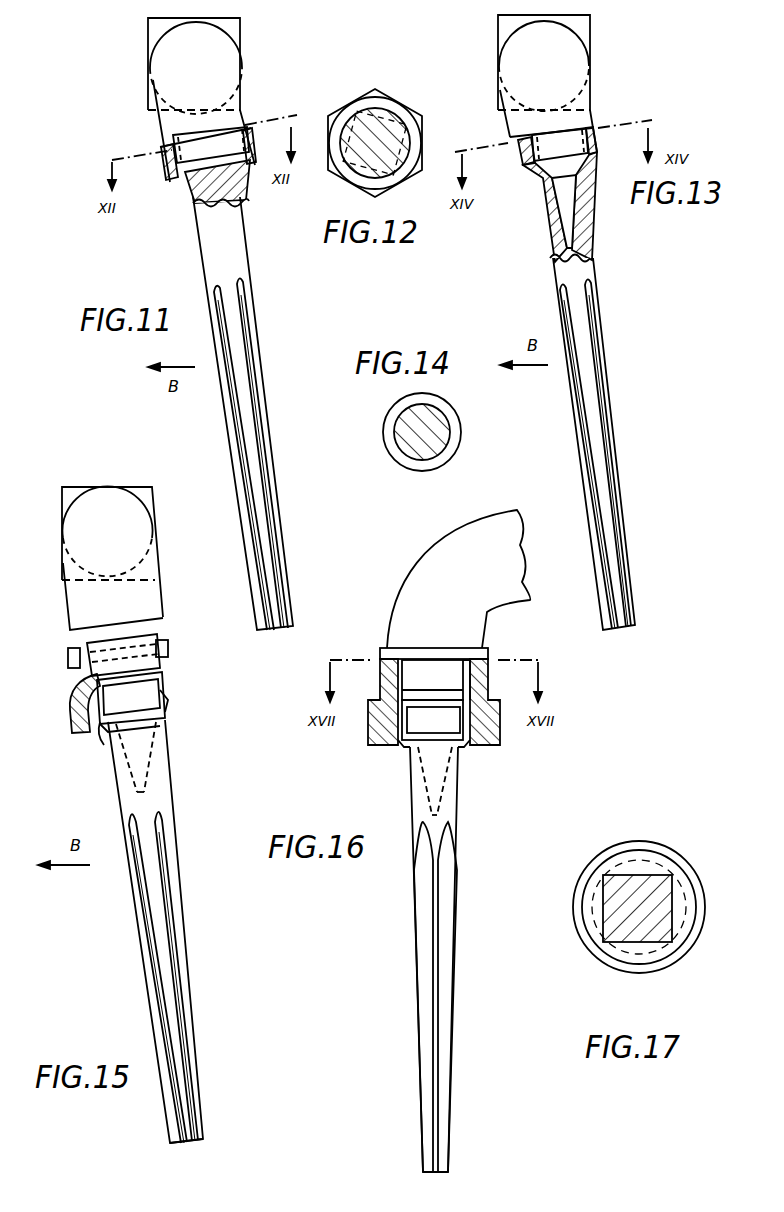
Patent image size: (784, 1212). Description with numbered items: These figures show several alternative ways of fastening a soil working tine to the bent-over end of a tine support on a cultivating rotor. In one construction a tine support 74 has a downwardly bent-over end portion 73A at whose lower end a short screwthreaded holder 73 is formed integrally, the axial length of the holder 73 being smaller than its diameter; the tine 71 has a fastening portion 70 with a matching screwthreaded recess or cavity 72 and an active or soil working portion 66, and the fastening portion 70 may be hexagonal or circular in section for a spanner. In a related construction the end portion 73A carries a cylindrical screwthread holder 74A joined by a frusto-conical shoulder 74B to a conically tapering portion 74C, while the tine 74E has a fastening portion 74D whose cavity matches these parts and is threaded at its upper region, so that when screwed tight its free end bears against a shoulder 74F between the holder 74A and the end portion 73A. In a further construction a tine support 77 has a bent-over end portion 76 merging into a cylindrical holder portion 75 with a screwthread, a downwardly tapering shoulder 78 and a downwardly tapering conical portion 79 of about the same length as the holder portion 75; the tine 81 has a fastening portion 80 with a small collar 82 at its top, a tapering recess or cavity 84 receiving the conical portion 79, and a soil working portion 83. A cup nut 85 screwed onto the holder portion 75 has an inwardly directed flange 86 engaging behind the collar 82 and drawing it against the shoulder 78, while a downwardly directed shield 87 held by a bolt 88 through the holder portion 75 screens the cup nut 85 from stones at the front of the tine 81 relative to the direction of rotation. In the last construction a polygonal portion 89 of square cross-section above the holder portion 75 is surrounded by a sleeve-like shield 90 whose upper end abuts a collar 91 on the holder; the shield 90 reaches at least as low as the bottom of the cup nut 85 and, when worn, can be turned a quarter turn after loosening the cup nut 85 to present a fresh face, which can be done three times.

In FIG. 11, the active or soil working portion 66 is at (230, 455).
In FIG. 11, the tine fastening portion 70 is at (165, 158).
In FIG. 12, the tine fastening portion 70 is at (358, 103).
In FIG. 11, the tine 71 is at (222, 418).
In FIG. 11, the recess or cavity 72 is at (190, 183).
In FIG. 11, the holder 73 is at (210, 150).
In FIG. 12, the holder 73 is at (385, 118).
In FIG. 11, the downwardly bent-over end portion 73A is at (165, 60).
In FIG. 13, the downwardly bent-over end portion 73A is at (520, 62).
In FIG. 11, the tine support 74 is at (240, 32).
In FIG. 13, the tine support 74 is at (500, 27).
In FIG. 13, the screwthread holder 74A is at (590, 145).
In FIG. 13, the frusto-conical shoulder 74B is at (553, 172).
In FIG. 14, the frusto-conical shoulder 74B is at (440, 432).
In FIG. 13, the conically tapering portion 74C is at (565, 212).
In FIG. 13, the fastening portion 74D is at (594, 248).
In FIG. 13, the tine 74E is at (616, 400).
In FIG. 14, the tine 74E is at (384, 431).
In FIG. 13, the shoulder 74F is at (520, 142).
In FIG. 15, the cylindrical holder portion 75 is at (140, 673).
In FIG. 16, the cylindrical holder portion 75 is at (440, 681).
In FIG. 15, the downwardly bent-over end portion 76 is at (145, 600).
In FIG. 15, the tine support 77 is at (130, 532).
In FIG. 16, the tine support 77 is at (465, 542).
In FIG. 15, the downwardly tapering shoulder 78 is at (160, 692).
In FIG. 16, the downwardly tapering shoulder 78 is at (430, 792).
In FIG. 15, the downwardly tapering conical portion 79 is at (145, 764).
In FIG. 16, the downwardly tapering conical portion 79 is at (413, 788).
In FIG. 15, the fastening portion 80 is at (118, 770).
In FIG. 16, the fastening portion 80 is at (458, 797).
In FIG. 15, the tine 81 is at (184, 936).
In FIG. 16, the tine 81 is at (456, 1031).
In FIG. 15, the collar 82 is at (170, 722).
In FIG. 16, the collar 82 is at (456, 750).
In FIG. 15, the active or soil working portion 83 is at (135, 894).
In FIG. 16, the active or soil working portion 83 is at (435, 909).
In FIG. 15, the downwardly tapering recess or cavity 84 is at (154, 794).
In FIG. 16, the downwardly tapering recess or cavity 84 is at (437, 816).
In FIG. 15, the cup nut 85 is at (110, 747).
In FIG. 16, the cup nut 85 is at (400, 750).
In FIG. 15, the inwardly directed flange 86 is at (170, 727).
In FIG. 16, the inwardly directed flange 86 is at (500, 752).
In FIG. 15, the shield 87 is at (70, 692).
In FIG. 15, the bolt 88 is at (68, 657).
In FIG. 16, the polygonal portion 89 is at (455, 662).
In FIG. 17, the polygonal portion 89 is at (618, 901).
In FIG. 16, the sleeve-like shield 90 is at (490, 694).
In FIG. 17, the sleeve-like shield 90 is at (648, 841).
In FIG. 16, the collar 91 is at (425, 650).